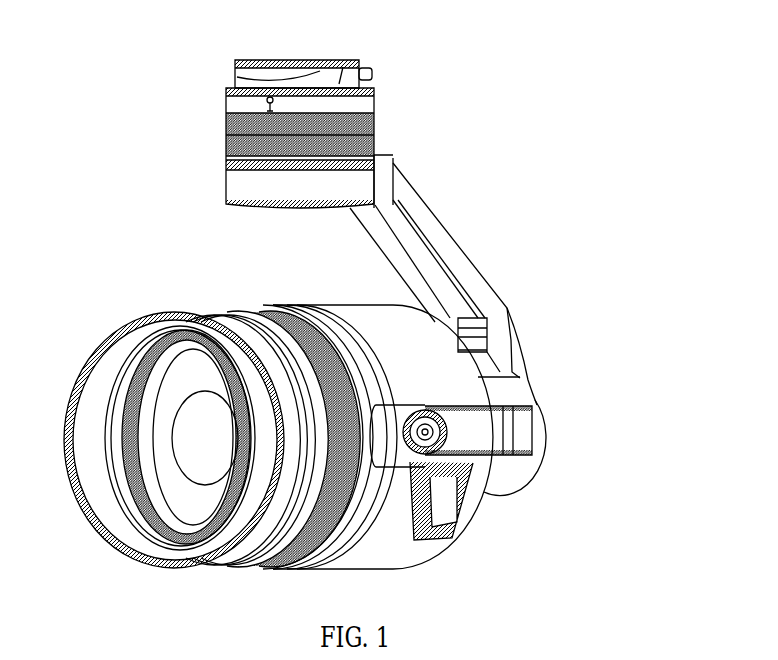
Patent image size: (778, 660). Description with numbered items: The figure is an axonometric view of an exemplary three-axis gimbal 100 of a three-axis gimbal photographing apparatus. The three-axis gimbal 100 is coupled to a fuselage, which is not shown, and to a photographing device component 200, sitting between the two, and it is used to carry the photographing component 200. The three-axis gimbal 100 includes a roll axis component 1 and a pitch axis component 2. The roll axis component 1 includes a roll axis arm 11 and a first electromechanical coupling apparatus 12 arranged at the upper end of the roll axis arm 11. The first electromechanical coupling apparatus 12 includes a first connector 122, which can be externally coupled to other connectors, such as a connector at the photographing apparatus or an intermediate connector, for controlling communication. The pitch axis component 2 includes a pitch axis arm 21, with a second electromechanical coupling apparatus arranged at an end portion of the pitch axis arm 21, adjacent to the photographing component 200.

The three-axis gimbal 100 is at (387, 162).
The roll axis component 1 is at (510, 340).
The roll axis arm 11 is at (463, 266).
The first electromechanical coupling apparatus 12 is at (250, 95).
The first connector 122 is at (355, 60).
The pitch axis component 2 is at (483, 437).
The pitch axis arm 21 is at (528, 401).
The photographing device component 200 is at (230, 353).